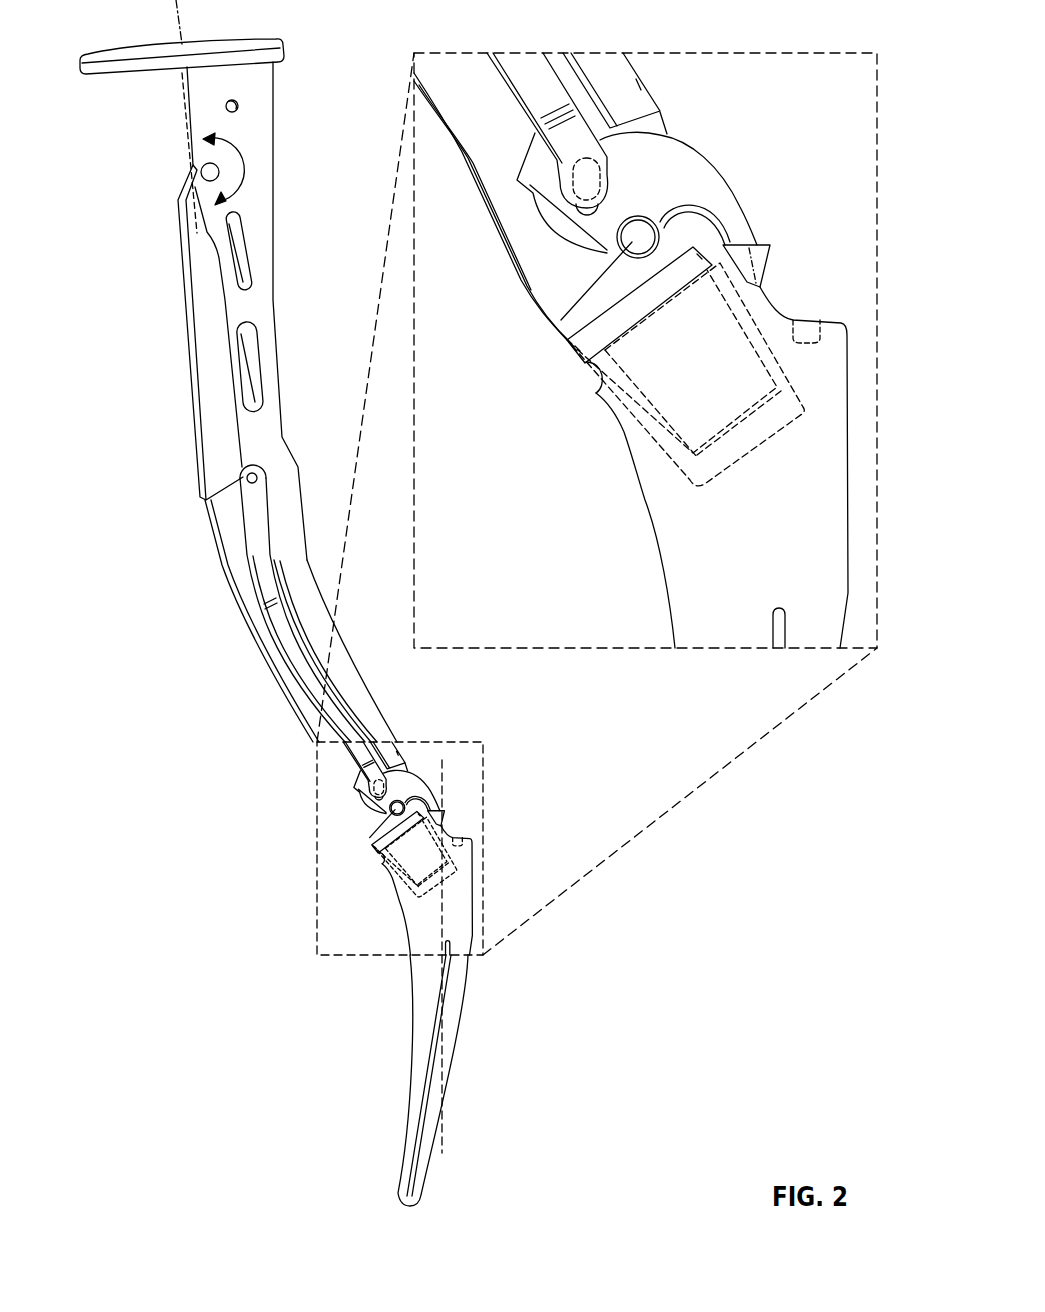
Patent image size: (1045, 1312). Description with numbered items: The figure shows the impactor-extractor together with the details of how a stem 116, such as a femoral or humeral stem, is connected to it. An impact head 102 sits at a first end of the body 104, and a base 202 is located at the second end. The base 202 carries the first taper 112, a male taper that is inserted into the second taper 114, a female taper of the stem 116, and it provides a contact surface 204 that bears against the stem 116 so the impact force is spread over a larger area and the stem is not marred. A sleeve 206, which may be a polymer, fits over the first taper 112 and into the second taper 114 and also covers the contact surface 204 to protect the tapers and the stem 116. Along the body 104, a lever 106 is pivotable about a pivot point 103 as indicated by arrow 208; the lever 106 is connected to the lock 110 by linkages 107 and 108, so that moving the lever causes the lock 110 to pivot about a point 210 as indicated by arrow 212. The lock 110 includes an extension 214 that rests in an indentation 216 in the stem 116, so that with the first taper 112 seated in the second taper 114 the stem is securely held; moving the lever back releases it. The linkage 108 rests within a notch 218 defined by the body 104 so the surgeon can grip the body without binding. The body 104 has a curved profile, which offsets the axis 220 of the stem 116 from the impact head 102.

The impact head 102 is at (145, 76).
The pivot point 103 is at (193, 167).
The body 104 is at (275, 89).
The lever 106 is at (185, 318).
The linkage 107 is at (237, 233).
The linkage 108 is at (300, 653).
The lock 110 is at (410, 780).
The first taper 112 is at (670, 402).
The second taper 114 is at (717, 460).
The stem 116 is at (413, 1012).
The base 202 is at (572, 352).
The contact surface 204 is at (597, 387).
The sleeve 206 is at (690, 470).
The arrow 208 is at (240, 157).
The point 210 is at (542, 297).
The arrow 212 is at (604, 236).
The extension 214 is at (740, 189).
The indentation 216 is at (760, 290).
The notch 218 is at (583, 100).
The axis 220 is at (443, 1122).